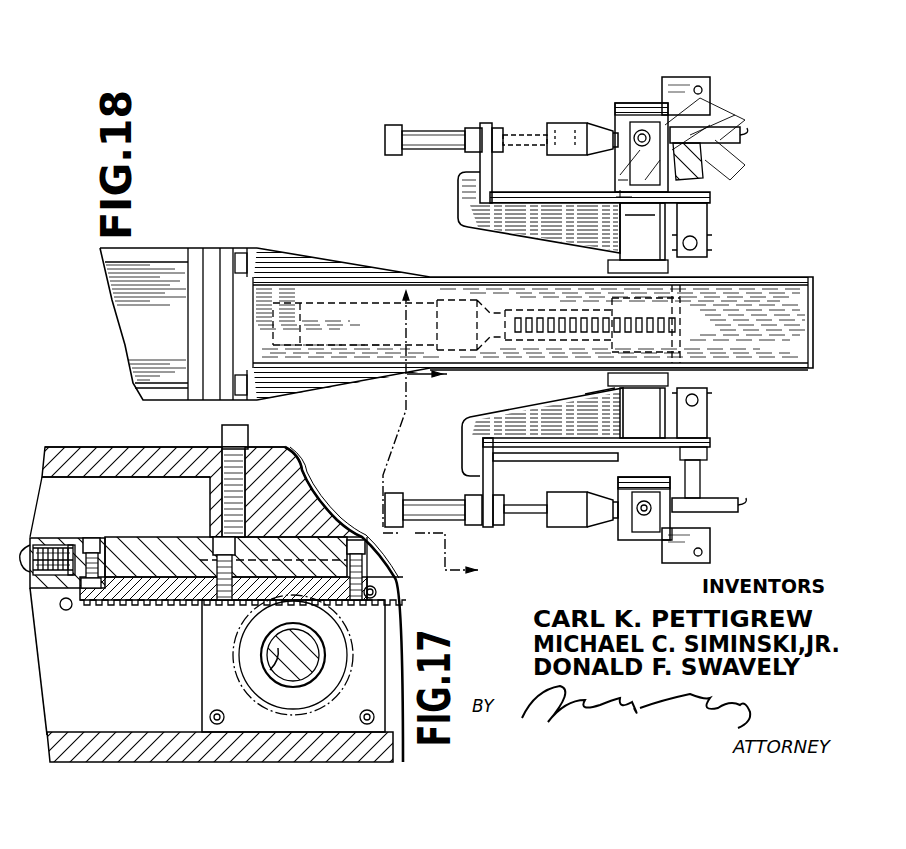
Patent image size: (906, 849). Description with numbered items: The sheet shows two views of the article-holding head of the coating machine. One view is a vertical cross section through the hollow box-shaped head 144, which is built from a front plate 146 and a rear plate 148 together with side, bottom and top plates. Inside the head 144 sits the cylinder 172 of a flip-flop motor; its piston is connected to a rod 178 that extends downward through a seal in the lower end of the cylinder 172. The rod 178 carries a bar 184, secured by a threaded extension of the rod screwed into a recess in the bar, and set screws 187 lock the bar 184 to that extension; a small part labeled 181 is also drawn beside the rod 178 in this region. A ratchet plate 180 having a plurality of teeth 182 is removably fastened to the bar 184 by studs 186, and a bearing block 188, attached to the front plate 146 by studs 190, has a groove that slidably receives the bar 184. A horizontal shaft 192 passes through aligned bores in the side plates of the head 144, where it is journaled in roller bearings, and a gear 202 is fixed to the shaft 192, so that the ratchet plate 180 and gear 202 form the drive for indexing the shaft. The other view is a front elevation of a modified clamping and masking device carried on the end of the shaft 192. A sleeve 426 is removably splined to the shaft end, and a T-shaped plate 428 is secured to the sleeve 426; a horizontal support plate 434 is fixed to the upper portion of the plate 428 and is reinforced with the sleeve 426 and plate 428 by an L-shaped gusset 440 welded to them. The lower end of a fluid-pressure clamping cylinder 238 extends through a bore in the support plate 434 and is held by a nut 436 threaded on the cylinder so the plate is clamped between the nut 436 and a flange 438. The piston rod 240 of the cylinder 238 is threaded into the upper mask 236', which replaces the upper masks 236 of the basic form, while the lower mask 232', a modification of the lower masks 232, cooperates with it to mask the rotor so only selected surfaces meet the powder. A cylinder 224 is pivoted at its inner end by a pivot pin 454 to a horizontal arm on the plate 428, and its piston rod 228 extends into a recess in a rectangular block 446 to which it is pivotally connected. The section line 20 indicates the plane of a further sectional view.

In FIG. 18, the section line 20 is at (431, 438).
In FIG. 18, the head 144 is at (430, 277).
In FIG. 17, the head 144 is at (135, 447).
In FIG. 17, the front plate 146 is at (112, 460).
In FIG. 17, the rear plate 148 is at (128, 740).
In FIG. 18, the cylinder 172 is at (405, 298).
In FIG. 17, the rod 178 is at (34, 548).
In FIG. 17, the ratchet plate 180 is at (82, 598).
In FIG. 17, the spacer 181 is at (68, 546).
In FIG. 17, the teeth 182 is at (140, 597).
In FIG. 17, the bar 184 is at (157, 548).
In FIG. 17, the studs 186 is at (93, 547).
In FIG. 17, the set screws 187 is at (42, 595).
In FIG. 17, the bearing block 188 is at (210, 525).
In FIG. 17, the studs 190 is at (222, 435).
In FIG. 18, the horizontal shaft 192 is at (592, 398).
In FIG. 17, the horizontal shaft 192 is at (263, 674).
In FIG. 17, the gear 202 is at (235, 645).
In FIG. 18, the cylinder 224 is at (712, 200).
In FIG. 18, the piston rod 228 is at (708, 520).
In FIG. 18, the lower masks 232 is at (644, 535).
In FIG. 18, the mask 232' is at (633, 122).
In FIG. 18, the upper masks 236 is at (582, 527).
In FIG. 18, the mask 236' is at (560, 105).
In FIG. 18, the clamping cylinder 238 is at (437, 128).
In FIG. 18, the piston rod 240 is at (536, 513).
In FIG. 18, the sleeve 426 is at (622, 437).
In FIG. 18, the T-shaped plate 428 is at (549, 454).
In FIG. 18, the support plate 434 is at (486, 123).
In FIG. 18, the nut 436 is at (497, 128).
In FIG. 18, the flange 438 is at (471, 128).
In FIG. 18, the gusset 440 is at (482, 226).
In FIG. 18, the rectangular block 446 is at (680, 80).
In FIG. 18, the pivot pin 454 is at (707, 244).